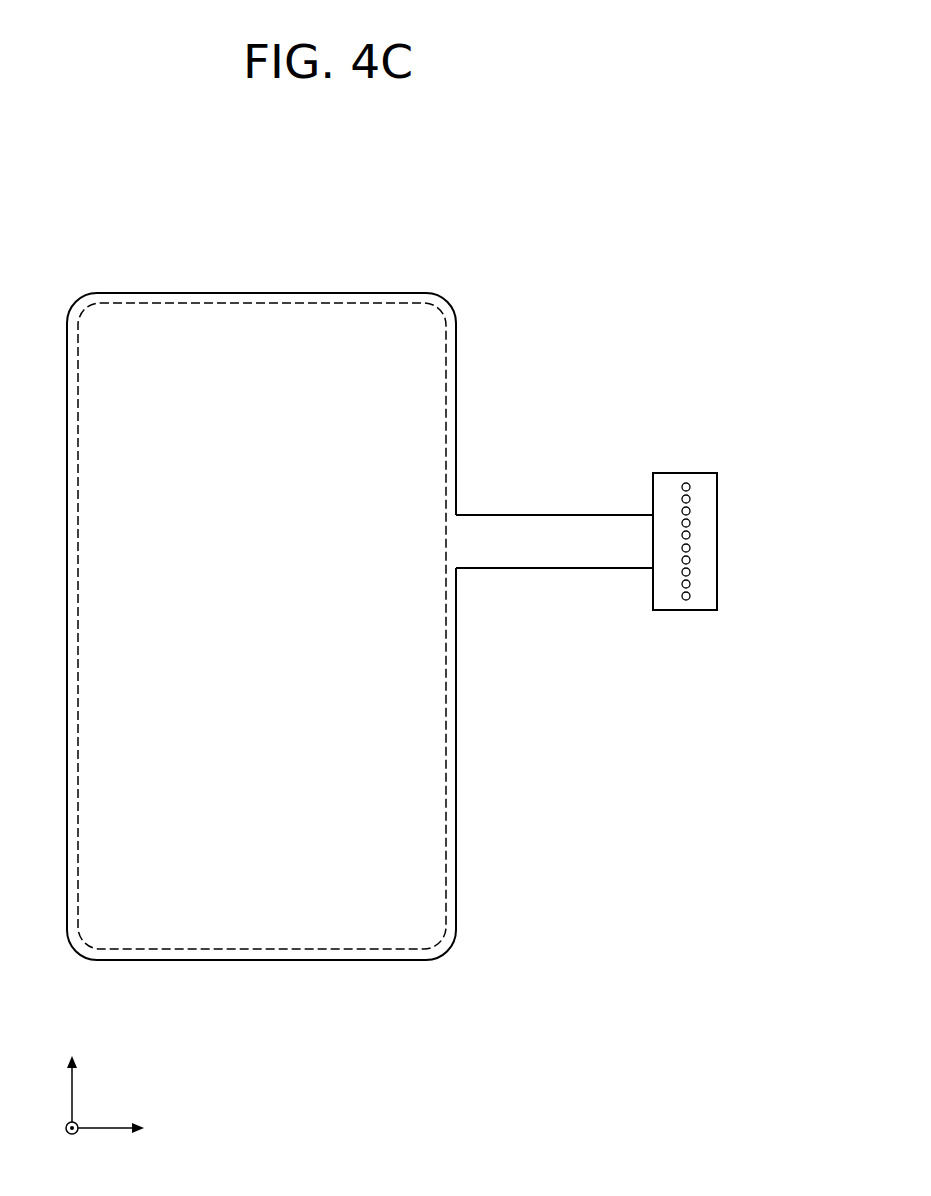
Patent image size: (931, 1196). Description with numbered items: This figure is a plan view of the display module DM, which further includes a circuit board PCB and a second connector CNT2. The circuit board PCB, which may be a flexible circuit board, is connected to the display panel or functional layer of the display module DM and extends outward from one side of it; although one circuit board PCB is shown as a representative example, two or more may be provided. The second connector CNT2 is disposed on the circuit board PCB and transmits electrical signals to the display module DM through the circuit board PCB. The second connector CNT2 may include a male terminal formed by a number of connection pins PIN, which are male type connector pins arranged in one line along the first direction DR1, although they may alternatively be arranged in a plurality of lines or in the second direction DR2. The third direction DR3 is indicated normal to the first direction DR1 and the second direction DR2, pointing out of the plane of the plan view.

The display module DM is at (493, 226).
The circuit board PCB is at (552, 558).
The second connector CNT2 is at (700, 499).
The connection pins PIN is at (690, 548).
The first direction DR1 is at (73, 1076).
The second direction DR2 is at (134, 1130).
The third direction DR3 is at (73, 1143).